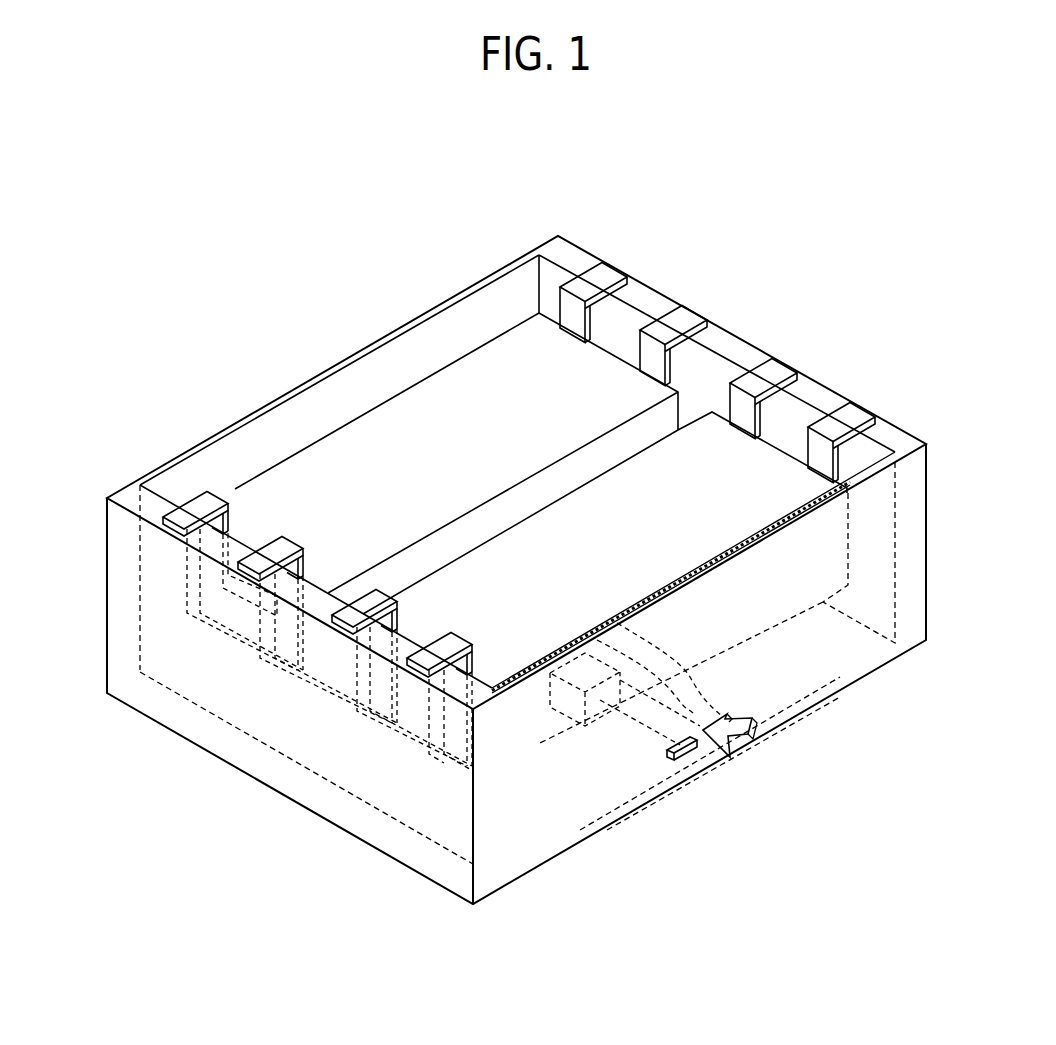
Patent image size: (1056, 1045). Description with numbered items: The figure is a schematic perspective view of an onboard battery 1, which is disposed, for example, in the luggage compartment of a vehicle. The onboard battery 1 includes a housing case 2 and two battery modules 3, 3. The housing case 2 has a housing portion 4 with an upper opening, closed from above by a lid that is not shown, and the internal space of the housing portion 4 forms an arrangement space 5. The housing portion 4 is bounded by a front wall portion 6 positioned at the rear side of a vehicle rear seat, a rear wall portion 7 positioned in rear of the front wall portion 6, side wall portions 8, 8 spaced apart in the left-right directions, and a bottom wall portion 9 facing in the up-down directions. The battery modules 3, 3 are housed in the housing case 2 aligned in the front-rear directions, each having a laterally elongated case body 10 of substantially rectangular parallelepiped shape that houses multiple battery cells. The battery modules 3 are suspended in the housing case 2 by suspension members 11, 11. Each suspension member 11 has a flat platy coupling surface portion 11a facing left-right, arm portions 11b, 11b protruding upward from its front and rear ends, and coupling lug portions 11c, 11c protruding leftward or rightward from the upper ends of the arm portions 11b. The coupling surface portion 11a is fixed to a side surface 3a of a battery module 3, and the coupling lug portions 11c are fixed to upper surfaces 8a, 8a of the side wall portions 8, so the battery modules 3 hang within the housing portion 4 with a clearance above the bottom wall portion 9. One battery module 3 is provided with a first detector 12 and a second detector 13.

The onboard battery 1 is at (861, 159).
The housing case 2 is at (566, 252).
The battery module 3 is at (412, 420).
The side surface 3a is at (325, 660).
The housing portion 4 is at (581, 252).
The arrangement space 5 is at (467, 325).
The front wall portion 6 is at (287, 394).
The rear wall portion 7 is at (840, 650).
The side wall portion 8 is at (720, 352).
The upper surface 8a is at (740, 354).
The bottom wall portion 9 is at (605, 822).
The case body 10 is at (430, 414).
The suspension member 11 is at (630, 327).
The coupling surface portion 11a is at (212, 630).
The arm portion 11b is at (568, 310).
The coupling lug portion 11c is at (606, 270).
The first detector 12 is at (683, 770).
The second detector 13 is at (740, 745).